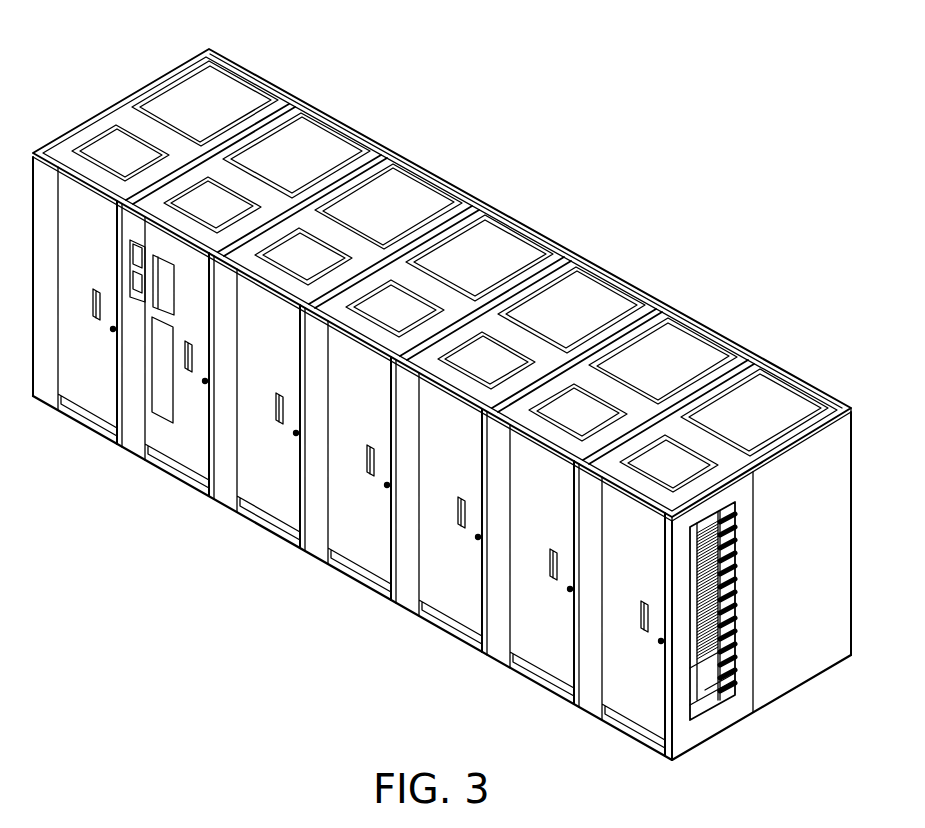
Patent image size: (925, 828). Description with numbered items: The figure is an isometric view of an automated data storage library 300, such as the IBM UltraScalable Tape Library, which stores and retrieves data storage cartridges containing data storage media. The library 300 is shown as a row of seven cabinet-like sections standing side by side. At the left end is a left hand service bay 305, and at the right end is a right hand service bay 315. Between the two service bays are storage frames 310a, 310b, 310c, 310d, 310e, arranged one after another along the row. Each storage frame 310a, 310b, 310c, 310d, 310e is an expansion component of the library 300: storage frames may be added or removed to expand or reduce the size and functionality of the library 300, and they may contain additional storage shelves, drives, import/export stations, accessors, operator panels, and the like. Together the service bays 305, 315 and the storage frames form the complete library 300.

The automated data storage library 300 is at (72, 53).
The left hand service bay 305 is at (263, 73).
The storage frame 310a is at (358, 126).
The storage frame 310b is at (447, 179).
The storage frame 310c is at (537, 229).
The storage frame 310d is at (628, 281).
The storage frame 310e is at (723, 333).
The right hand service bay 315 is at (805, 381).